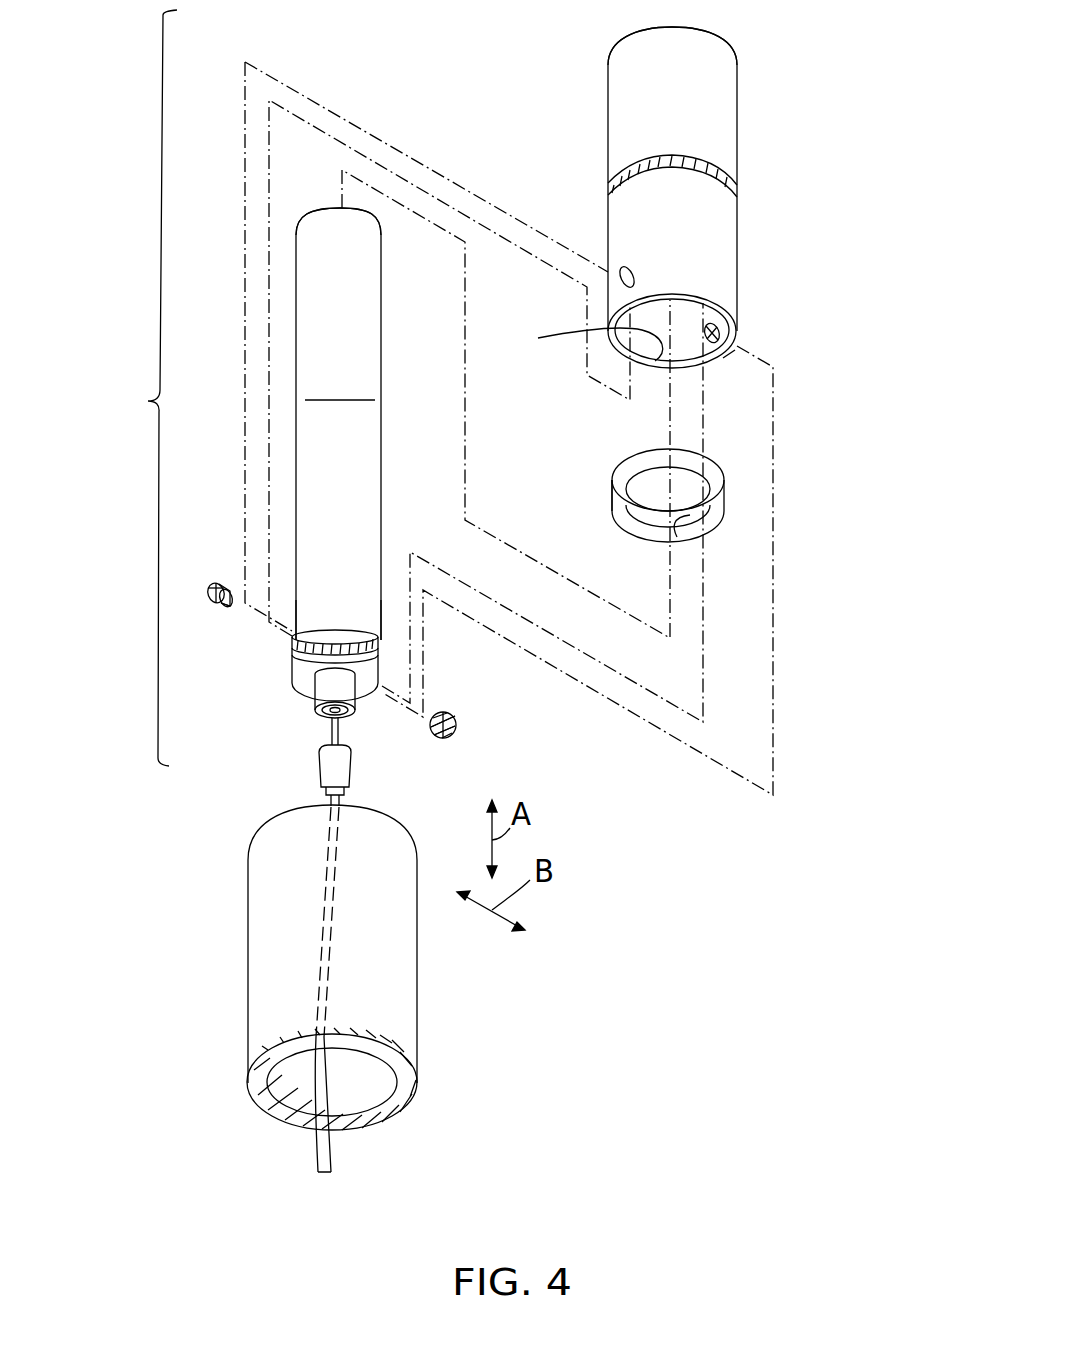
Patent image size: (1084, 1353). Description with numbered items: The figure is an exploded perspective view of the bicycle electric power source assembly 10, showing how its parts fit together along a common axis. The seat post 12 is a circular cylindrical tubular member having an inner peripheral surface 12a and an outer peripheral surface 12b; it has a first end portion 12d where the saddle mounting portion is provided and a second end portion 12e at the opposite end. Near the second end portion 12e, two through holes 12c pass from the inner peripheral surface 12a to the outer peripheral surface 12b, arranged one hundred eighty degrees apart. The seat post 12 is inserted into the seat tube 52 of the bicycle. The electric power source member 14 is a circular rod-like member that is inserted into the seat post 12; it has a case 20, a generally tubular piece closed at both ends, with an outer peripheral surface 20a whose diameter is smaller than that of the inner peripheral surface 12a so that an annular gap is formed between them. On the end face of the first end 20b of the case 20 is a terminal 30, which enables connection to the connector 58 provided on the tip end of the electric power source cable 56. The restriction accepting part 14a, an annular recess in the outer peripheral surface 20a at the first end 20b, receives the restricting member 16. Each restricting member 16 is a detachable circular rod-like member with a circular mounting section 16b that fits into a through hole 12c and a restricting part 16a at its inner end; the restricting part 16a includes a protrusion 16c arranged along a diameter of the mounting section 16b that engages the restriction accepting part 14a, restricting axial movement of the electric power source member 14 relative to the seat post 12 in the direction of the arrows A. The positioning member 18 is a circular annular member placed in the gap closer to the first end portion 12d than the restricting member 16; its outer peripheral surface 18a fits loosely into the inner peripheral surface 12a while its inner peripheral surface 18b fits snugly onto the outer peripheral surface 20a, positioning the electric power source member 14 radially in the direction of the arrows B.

The bicycle electric power source assembly 10 is at (148, 401).
The seat post 12 is at (739, 222).
The inner peripheral surface 12a is at (574, 338).
The outer peripheral surface 12b is at (720, 123).
The through hole 12c is at (623, 273).
The first end portion 12d is at (727, 43).
The second end portion 12e is at (735, 352).
The electric power source member 14 is at (360, 207).
The restriction accepting part 14a is at (366, 640).
The restricting member 16 is at (221, 583).
The restricting part 16a is at (238, 615).
The mounting section 16b is at (225, 607).
The protrusion 16c is at (237, 607).
The positioning member 18 is at (620, 458).
The outer peripheral surface 18a is at (620, 482).
The inner peripheral surface 18b is at (677, 537).
The case 20 is at (294, 293).
The outer peripheral surface 20a is at (325, 403).
The first end 20b is at (327, 635).
The terminal 30 is at (345, 723).
The seat tube 52 is at (417, 967).
The electric power source cable 56 is at (323, 1088).
The connector 58 is at (318, 760).